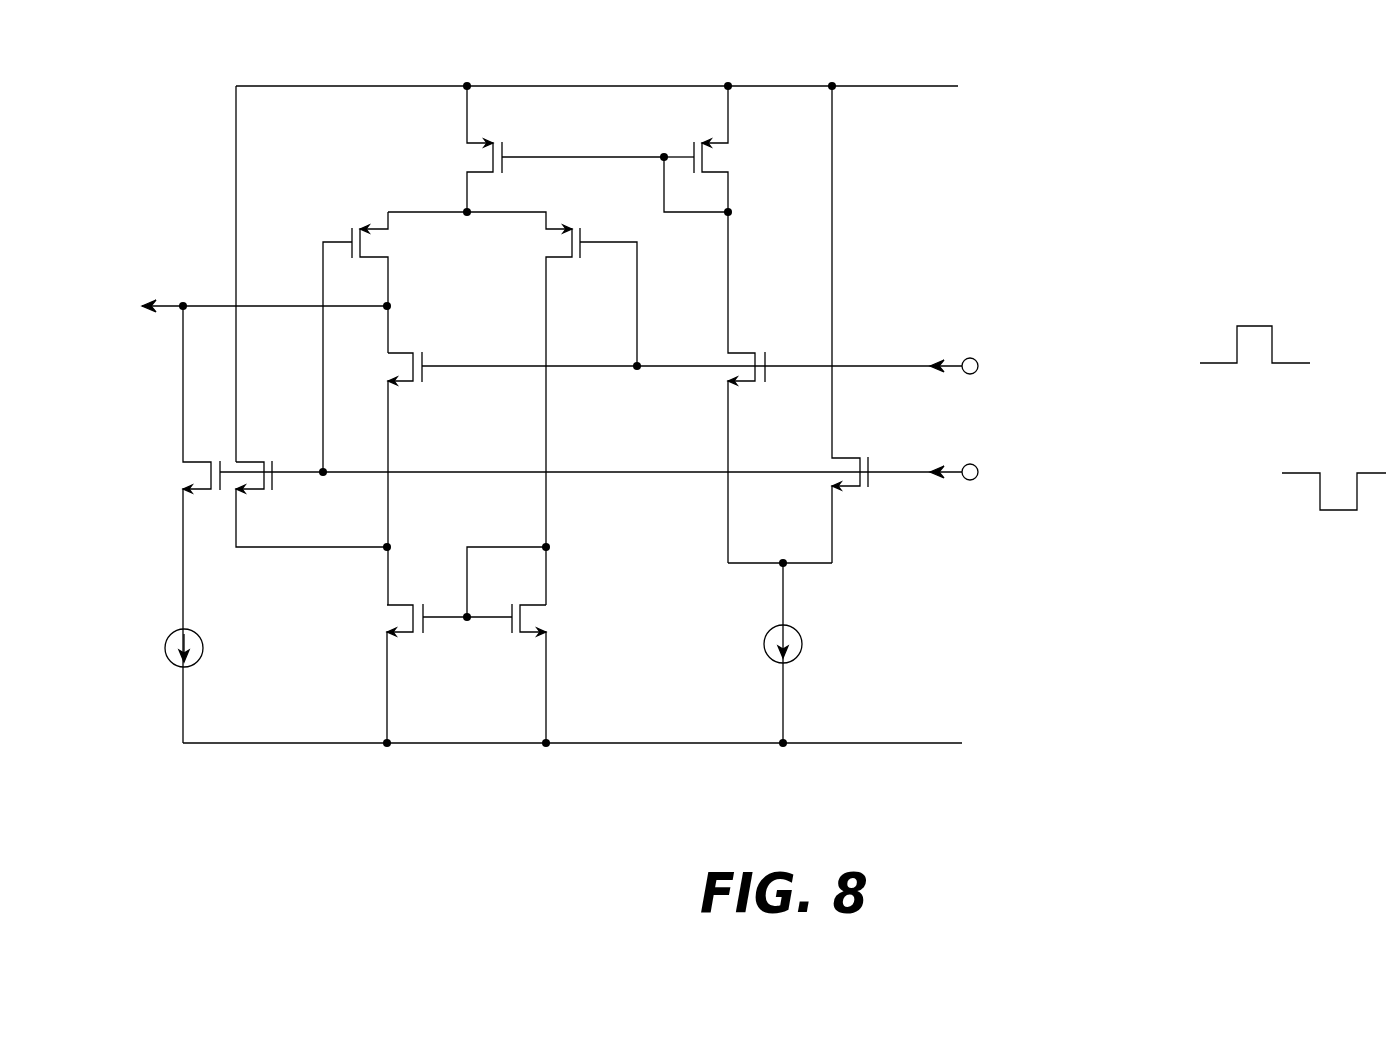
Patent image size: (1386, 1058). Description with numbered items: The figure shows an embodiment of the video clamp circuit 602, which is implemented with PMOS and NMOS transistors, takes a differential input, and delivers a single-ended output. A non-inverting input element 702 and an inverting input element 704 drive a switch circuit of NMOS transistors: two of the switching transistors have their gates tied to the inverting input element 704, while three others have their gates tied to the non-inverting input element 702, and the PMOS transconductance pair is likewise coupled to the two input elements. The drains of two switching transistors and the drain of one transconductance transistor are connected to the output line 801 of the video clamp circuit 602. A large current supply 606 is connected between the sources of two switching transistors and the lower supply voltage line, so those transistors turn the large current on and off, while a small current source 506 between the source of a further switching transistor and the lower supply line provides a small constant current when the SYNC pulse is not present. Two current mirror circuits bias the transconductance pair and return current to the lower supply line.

The video clamp circuit 602 is at (1020, 150).
The output line 801 is at (183, 305).
The inverting input element 704 is at (971, 357).
The non-inverting input element 702 is at (970, 481).
The small current source 506 is at (164, 649).
The large current supply 606 is at (764, 647).